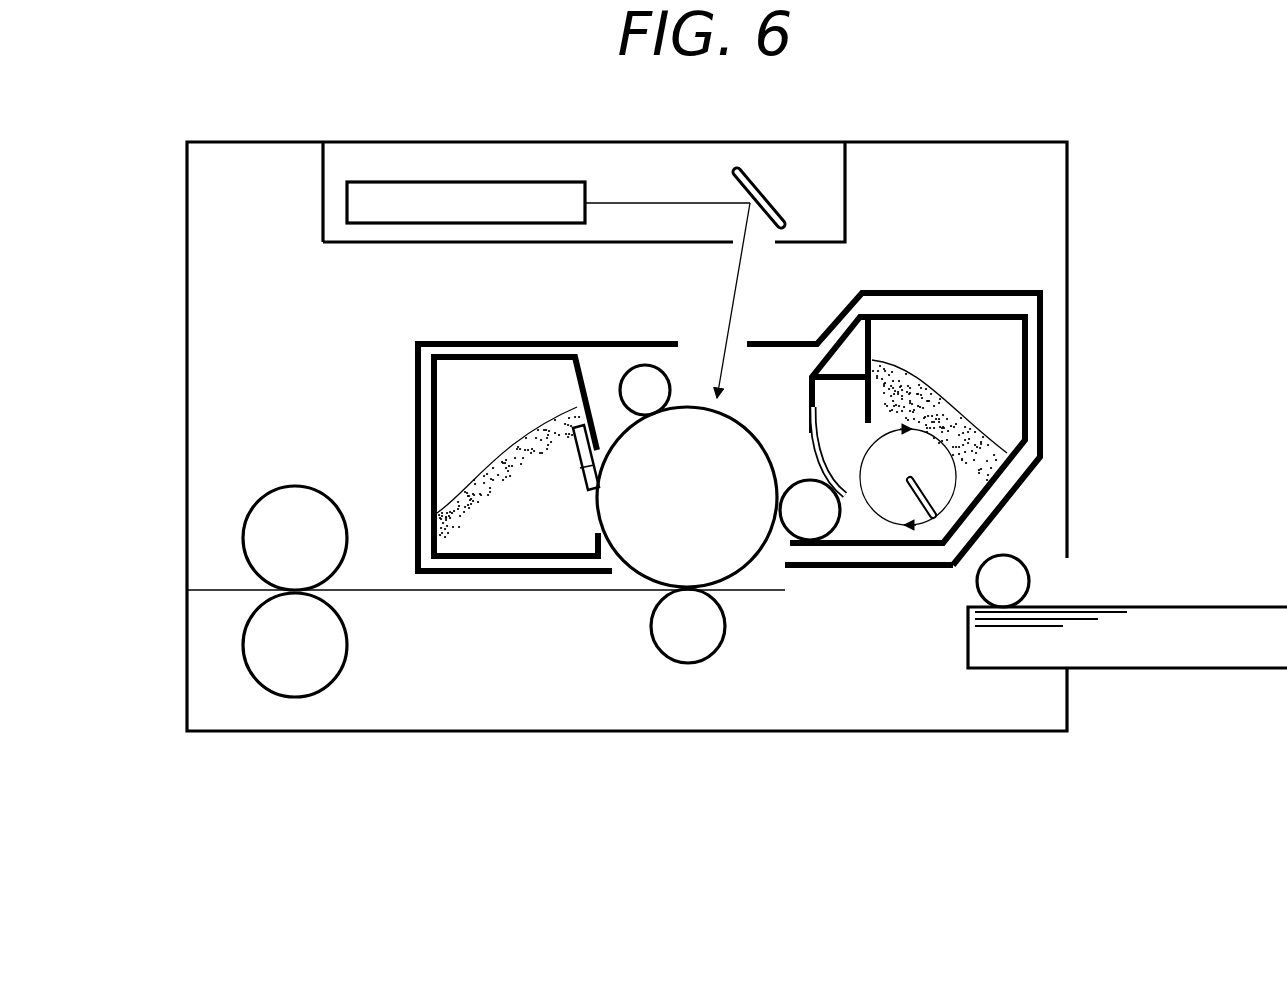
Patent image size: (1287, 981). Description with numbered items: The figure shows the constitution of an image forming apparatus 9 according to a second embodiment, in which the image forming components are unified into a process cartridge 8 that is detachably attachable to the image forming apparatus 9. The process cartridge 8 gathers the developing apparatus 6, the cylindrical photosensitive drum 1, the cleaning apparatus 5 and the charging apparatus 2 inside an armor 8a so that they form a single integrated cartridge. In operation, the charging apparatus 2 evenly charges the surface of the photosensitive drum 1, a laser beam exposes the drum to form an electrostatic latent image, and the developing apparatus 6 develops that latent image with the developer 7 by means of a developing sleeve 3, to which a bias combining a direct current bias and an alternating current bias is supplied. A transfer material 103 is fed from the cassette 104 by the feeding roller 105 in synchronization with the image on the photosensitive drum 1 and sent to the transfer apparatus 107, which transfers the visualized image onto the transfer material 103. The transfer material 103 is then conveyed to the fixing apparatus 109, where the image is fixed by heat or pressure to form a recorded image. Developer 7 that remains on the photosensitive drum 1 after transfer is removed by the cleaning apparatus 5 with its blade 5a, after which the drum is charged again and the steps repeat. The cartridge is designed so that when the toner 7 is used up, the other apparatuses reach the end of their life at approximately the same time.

The photosensitive drum 1 is at (637, 557).
The charging apparatus 2 is at (633, 378).
The developing sleeve 3 is at (813, 541).
The cleaning apparatus 5 is at (433, 436).
The blade 5a is at (580, 466).
The developing apparatus 6 is at (977, 313).
The developer 7 is at (915, 375).
The process cartridge 8 is at (556, 334).
The armor 8a is at (838, 568).
The image forming apparatus 9 is at (1084, 256).
The transfer material 103 is at (1222, 617).
The cassette 104 is at (1110, 670).
The feeding roller 105 is at (1007, 565).
The transfer apparatus 107 is at (687, 654).
The fixing apparatus 109 is at (290, 492).